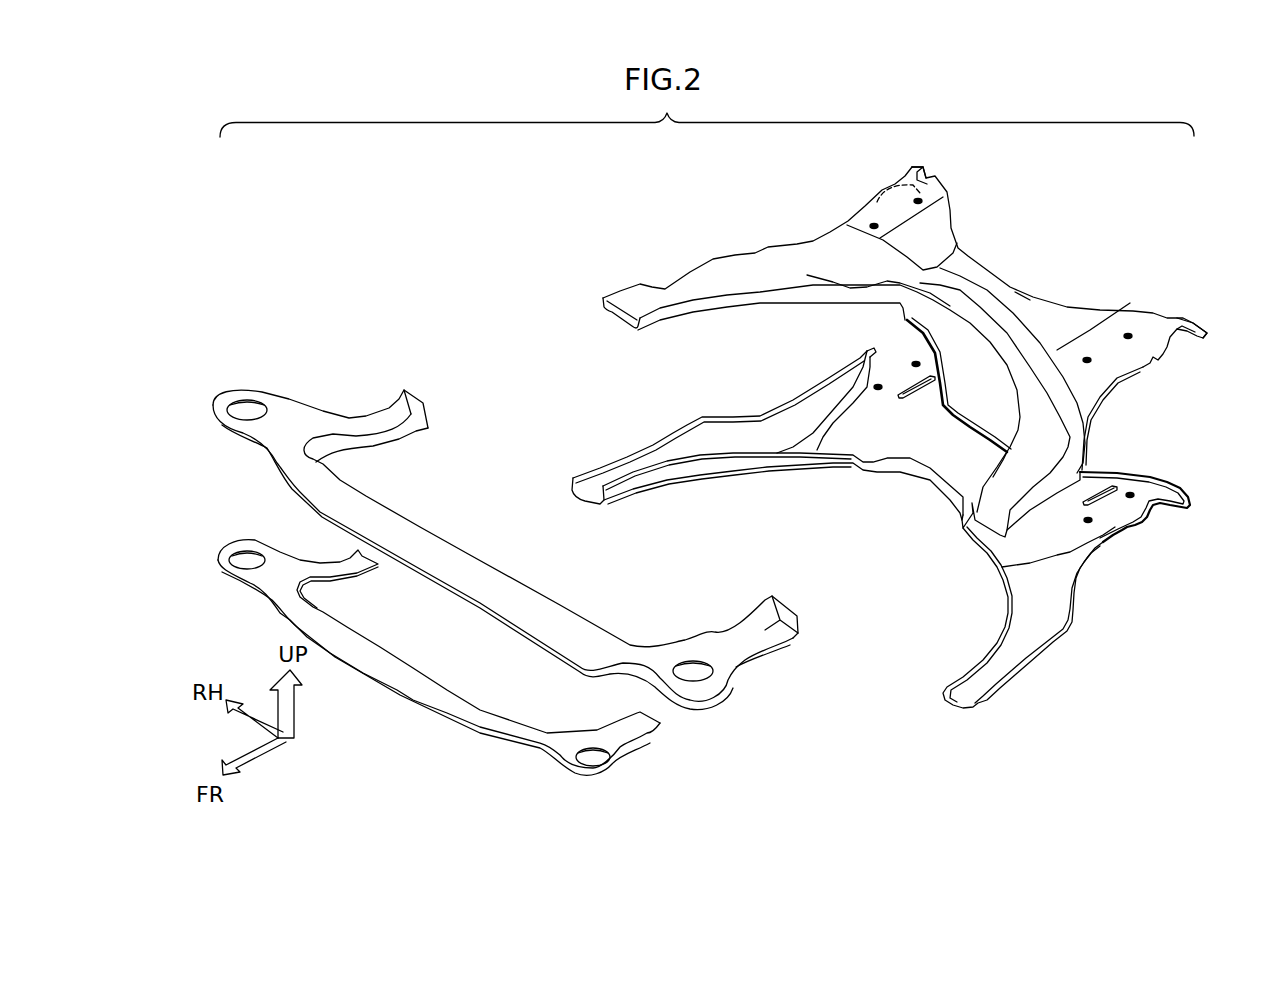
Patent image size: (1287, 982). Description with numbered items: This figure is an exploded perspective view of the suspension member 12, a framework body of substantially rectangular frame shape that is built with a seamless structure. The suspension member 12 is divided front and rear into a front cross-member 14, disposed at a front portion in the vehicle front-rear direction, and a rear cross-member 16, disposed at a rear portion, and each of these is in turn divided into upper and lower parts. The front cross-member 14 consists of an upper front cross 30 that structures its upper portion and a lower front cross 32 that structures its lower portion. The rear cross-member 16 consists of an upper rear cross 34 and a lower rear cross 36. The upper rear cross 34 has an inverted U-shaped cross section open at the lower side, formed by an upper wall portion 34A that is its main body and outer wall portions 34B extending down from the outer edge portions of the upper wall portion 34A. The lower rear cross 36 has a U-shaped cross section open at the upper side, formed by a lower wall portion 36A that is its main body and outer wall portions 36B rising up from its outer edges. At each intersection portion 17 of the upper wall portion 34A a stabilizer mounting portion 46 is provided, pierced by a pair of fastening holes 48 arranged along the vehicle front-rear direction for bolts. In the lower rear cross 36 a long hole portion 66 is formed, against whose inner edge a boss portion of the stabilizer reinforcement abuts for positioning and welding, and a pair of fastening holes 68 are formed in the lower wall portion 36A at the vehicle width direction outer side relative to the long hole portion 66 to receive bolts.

The suspension member 12 is at (448, 185).
The front cross-member 14 is at (378, 291).
The rear cross-member 16 is at (602, 214).
The intersection portion 17 is at (966, 232).
The upper front cross 30 is at (515, 557).
The lower front cross 32 is at (448, 671).
The upper rear cross 34 is at (1025, 260).
The upper wall portion 34A is at (1023, 301).
The outer wall portions 34B is at (1137, 365).
The lower rear cross 36 is at (909, 496).
The lower wall portion 36A is at (1055, 590).
The outer wall portions 36B is at (1101, 546).
The stabilizer mounting portion 46 is at (938, 170).
The fastening holes 48 is at (872, 225).
The long hole portion 66 is at (922, 390).
The fastening holes 68 is at (877, 385).